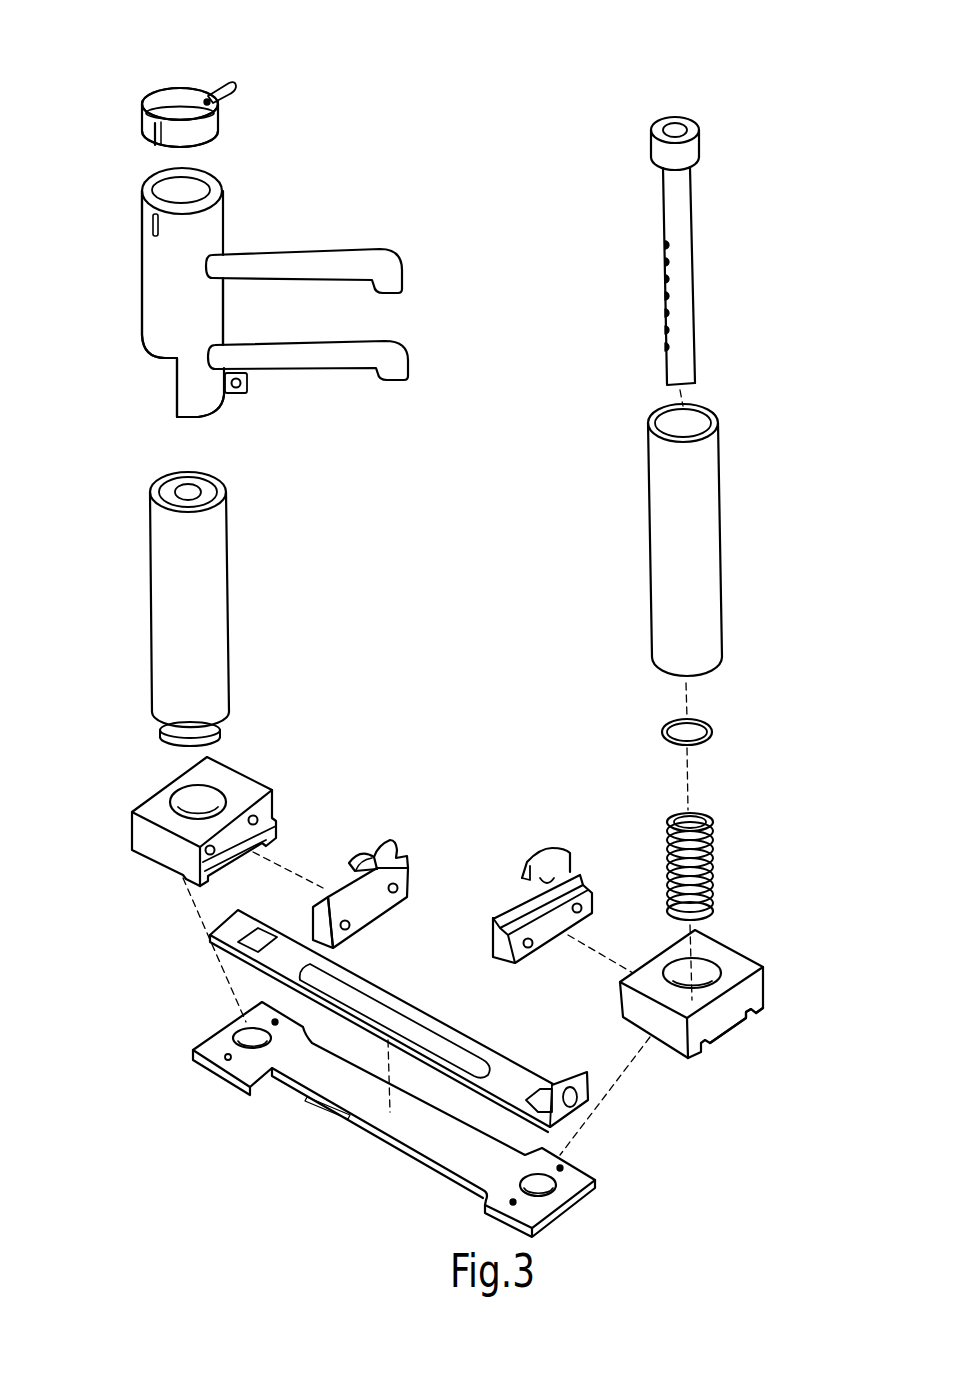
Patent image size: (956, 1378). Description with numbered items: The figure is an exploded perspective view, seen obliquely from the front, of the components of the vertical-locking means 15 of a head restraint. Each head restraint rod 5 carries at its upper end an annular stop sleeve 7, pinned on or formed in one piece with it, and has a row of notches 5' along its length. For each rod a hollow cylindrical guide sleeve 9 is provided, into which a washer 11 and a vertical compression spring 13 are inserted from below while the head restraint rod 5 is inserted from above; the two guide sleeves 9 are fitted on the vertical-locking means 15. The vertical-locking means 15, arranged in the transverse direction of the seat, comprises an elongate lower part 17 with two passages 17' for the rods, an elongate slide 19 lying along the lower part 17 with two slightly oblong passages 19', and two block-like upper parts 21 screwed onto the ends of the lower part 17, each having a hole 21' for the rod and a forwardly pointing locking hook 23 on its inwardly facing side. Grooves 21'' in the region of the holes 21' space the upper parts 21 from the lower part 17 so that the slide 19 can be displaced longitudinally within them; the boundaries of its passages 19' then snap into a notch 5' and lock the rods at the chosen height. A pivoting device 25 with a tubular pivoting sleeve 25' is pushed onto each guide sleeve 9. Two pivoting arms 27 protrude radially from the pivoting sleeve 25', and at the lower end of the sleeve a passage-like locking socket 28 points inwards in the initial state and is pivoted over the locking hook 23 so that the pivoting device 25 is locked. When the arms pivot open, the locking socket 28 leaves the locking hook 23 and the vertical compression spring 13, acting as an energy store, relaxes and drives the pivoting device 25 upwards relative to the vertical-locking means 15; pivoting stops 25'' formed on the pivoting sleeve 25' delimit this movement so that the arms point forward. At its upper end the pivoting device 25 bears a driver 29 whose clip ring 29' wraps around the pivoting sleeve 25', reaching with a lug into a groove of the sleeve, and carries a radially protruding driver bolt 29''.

The head restraint rod 5 is at (469, 326).
The notch 5' is at (627, 296).
The stop sleeve 7 is at (692, 148).
The guide sleeve 9 is at (198, 618).
The washer 11 is at (715, 732).
The vertical compression spring 13 is at (715, 870).
The vertical-locking means 15 is at (628, 1108).
The lower part 17 is at (394, 1124).
The passage 17' is at (396, 1139).
The slide 19 is at (399, 1021).
The passage 19' is at (355, 1020).
The upper part 21 is at (459, 911).
The hole 21' is at (500, 840).
The groove 21'' is at (779, 1014).
The locking hook 23 is at (368, 860).
The pivoting device 25 is at (246, 281).
The pivoting sleeve 25' is at (146, 268).
The pivoting stop 25'' is at (149, 376).
The pivoting arm 27 is at (343, 262).
The locking socket 28 is at (247, 390).
The driver 29 is at (249, 113).
The clip ring 29' is at (160, 86).
The driver bolt 29'' is at (227, 59).